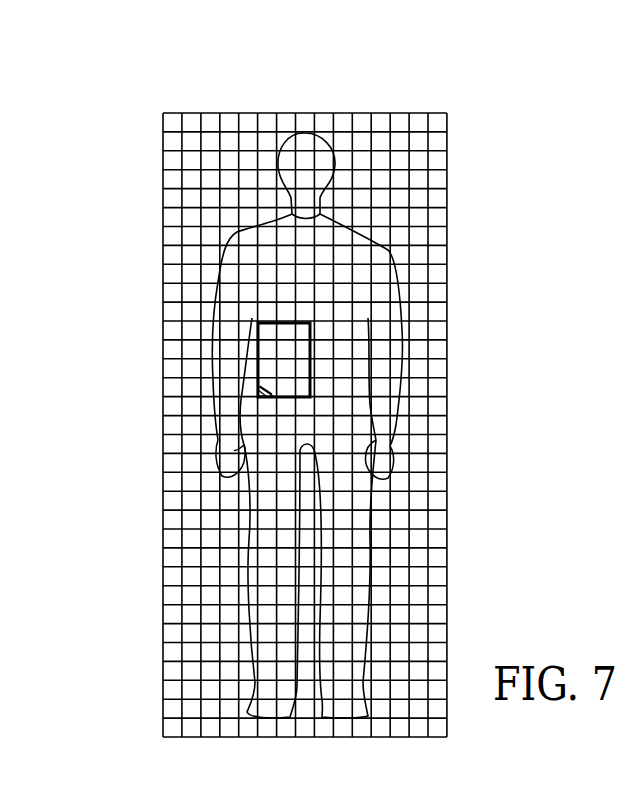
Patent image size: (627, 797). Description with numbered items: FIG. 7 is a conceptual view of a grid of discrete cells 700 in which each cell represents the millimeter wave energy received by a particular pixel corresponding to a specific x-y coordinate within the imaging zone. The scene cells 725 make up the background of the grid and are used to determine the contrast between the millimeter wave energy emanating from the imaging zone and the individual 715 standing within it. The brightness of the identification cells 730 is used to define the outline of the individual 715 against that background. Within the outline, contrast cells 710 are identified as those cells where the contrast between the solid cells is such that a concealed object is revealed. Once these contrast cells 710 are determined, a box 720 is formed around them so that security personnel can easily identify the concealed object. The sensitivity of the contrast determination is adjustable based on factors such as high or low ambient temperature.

The grid of discrete cells 700 is at (500, 315).
The contrast cells 710 is at (256, 370).
The individual 715 is at (308, 131).
The box 720 is at (257, 396).
The scene cells 725 is at (162, 240).
The identification cells 730 is at (280, 560).